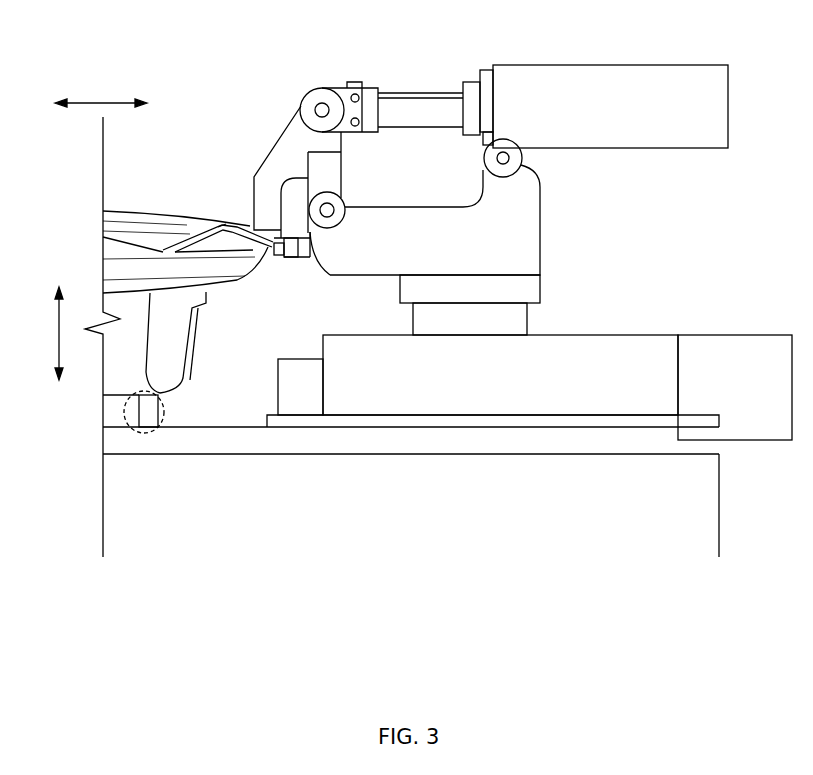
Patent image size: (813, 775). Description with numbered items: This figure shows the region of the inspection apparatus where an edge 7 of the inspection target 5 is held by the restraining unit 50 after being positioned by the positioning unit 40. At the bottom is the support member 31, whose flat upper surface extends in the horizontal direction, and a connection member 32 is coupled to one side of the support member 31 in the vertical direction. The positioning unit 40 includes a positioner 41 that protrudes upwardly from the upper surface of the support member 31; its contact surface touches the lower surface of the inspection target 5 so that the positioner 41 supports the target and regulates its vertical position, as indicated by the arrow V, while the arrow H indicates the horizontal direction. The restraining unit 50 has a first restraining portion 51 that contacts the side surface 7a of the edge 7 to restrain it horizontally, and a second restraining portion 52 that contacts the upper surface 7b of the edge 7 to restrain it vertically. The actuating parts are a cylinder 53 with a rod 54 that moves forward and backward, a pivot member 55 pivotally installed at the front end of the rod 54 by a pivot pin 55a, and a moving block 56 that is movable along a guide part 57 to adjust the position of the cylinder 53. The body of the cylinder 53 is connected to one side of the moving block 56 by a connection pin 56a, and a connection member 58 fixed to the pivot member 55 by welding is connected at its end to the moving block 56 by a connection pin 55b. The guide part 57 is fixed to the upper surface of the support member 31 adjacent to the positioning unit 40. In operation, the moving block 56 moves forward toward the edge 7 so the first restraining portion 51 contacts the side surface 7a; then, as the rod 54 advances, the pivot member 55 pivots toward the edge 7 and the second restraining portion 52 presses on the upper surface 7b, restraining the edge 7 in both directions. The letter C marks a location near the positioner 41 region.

The inspection target 5 is at (108, 258).
The edge 7 is at (264, 270).
The side surface 7a is at (279, 257).
The upper surface 7b is at (250, 223).
The support member 31 is at (375, 450).
The connection member 32 is at (713, 487).
The positioning unit 40 is at (119, 412).
The positioner 41 is at (153, 410).
The restraining unit 50 is at (234, 151).
The first restraining portion 51 is at (291, 258).
The second restraining portion 52 is at (310, 250).
The cylinder 53 is at (590, 73).
The rod 54 is at (422, 100).
The pivot member 55 is at (287, 138).
The pivot pin 55a is at (320, 89).
The connection pin 55b is at (332, 205).
The moving block 56 is at (530, 230).
The connection pin 56a is at (508, 158).
The guide part 57 is at (643, 345).
The connection member 58 is at (328, 158).
The horizontal direction arrow H is at (103, 101).
The vertical direction arrow V is at (59, 330).
The center line C is at (146, 448).